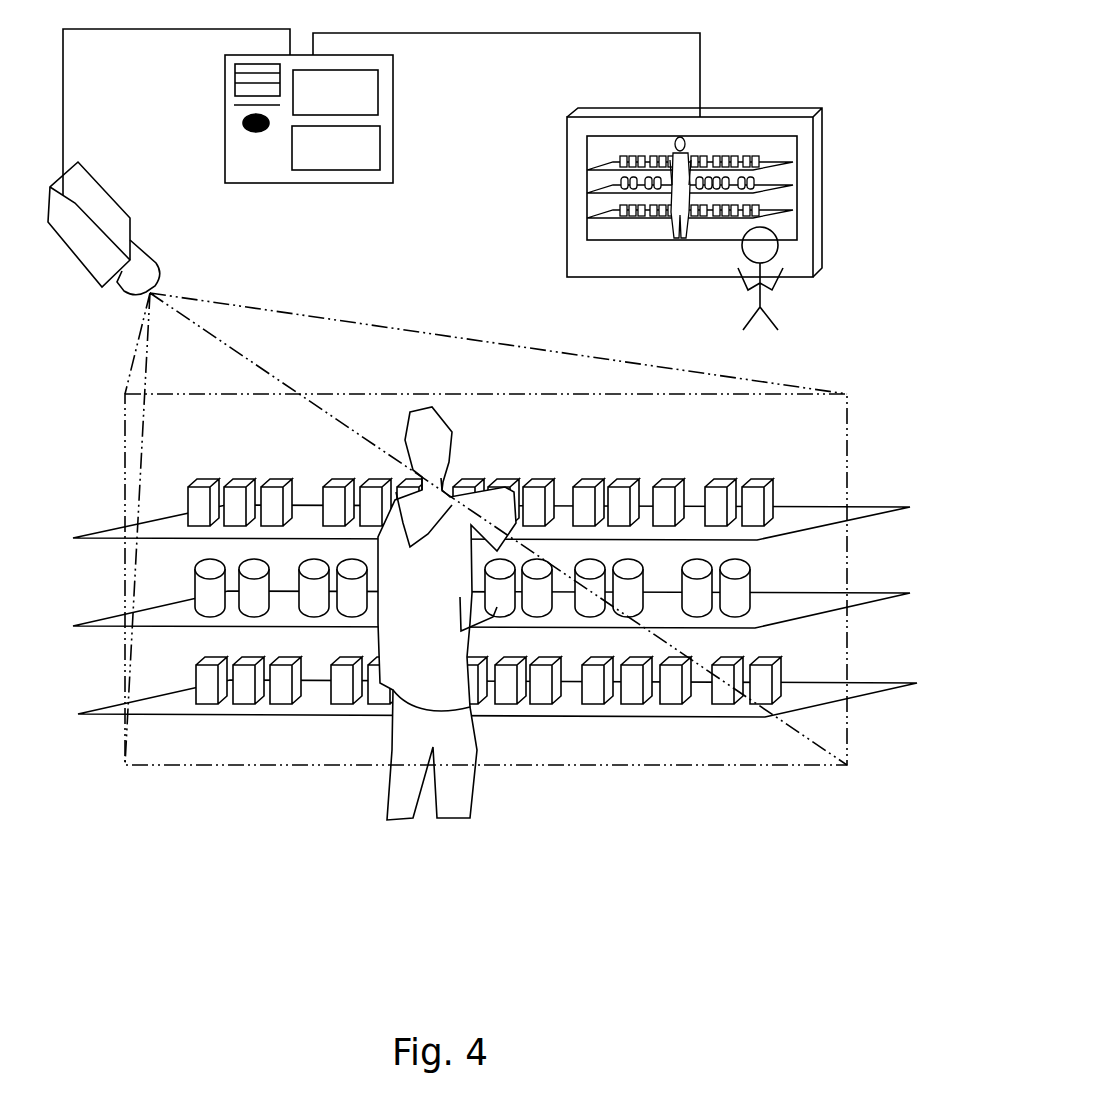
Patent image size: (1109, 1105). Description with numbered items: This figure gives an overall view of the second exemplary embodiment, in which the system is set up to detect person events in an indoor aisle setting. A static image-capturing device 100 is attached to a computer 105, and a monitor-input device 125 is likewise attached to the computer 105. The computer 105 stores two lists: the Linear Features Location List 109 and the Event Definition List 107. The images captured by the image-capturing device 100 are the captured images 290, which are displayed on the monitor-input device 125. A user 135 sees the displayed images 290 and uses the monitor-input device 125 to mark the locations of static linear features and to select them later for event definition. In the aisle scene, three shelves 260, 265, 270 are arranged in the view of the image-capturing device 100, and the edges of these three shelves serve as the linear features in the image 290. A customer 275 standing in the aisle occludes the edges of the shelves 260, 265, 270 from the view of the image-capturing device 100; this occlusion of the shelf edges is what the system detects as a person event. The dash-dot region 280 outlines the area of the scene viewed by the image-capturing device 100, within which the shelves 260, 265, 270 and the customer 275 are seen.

The static image-capturing device 100 is at (67, 245).
The computer 105 is at (225, 127).
The Event Definition List (EDL) 107 is at (367, 98).
The Linear Features Location List (LFLL) 109 is at (372, 158).
The monitor-input device 125 is at (567, 240).
The captured images 290 is at (643, 233).
The user 135 is at (770, 325).
The shelf 260 is at (165, 538).
The shelf 265 is at (167, 628).
The shelf 270 is at (178, 715).
The customer 275 is at (392, 783).
The camera field of view region 280 is at (673, 765).